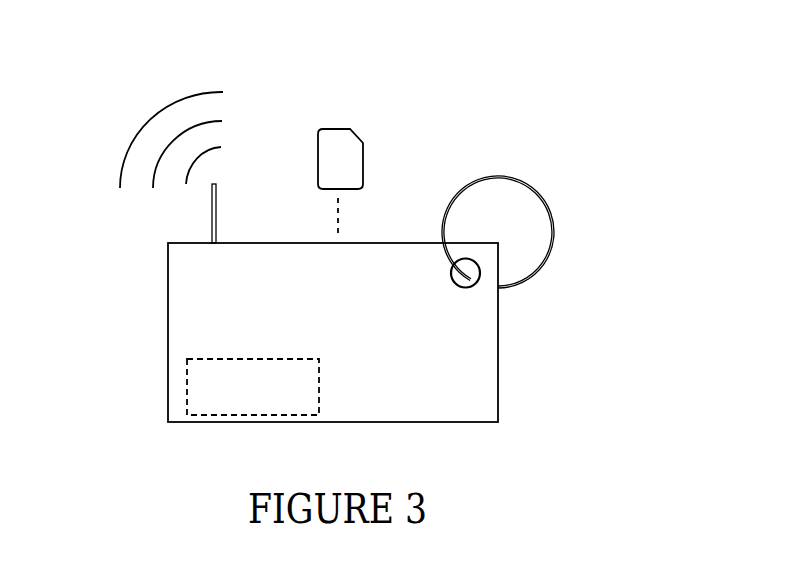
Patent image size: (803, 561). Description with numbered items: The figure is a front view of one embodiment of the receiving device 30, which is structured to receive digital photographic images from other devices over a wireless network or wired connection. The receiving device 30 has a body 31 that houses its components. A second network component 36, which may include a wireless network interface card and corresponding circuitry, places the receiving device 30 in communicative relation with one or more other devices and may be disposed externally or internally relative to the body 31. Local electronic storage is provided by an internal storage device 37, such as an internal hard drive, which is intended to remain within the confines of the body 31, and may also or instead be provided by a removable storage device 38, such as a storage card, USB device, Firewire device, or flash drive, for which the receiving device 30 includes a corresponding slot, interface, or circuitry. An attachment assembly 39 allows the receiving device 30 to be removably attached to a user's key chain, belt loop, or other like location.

The receiving device 30 is at (575, 137).
The body 31 is at (427, 365).
The second network component 36 is at (216, 210).
The internal storage device 37 is at (187, 385).
The removable storage device 38 is at (338, 129).
The attachment assembly 39 is at (575, 232).